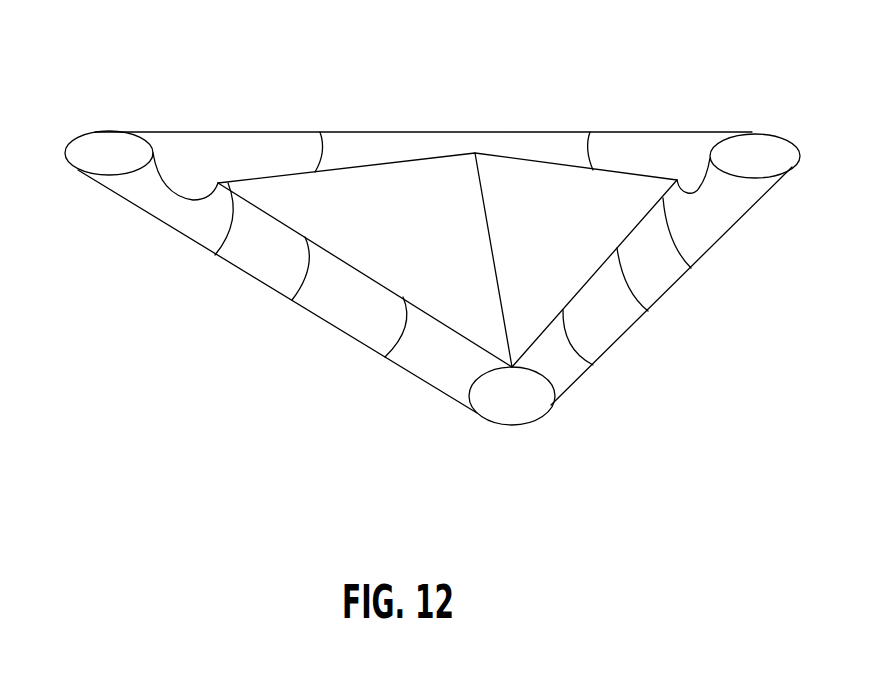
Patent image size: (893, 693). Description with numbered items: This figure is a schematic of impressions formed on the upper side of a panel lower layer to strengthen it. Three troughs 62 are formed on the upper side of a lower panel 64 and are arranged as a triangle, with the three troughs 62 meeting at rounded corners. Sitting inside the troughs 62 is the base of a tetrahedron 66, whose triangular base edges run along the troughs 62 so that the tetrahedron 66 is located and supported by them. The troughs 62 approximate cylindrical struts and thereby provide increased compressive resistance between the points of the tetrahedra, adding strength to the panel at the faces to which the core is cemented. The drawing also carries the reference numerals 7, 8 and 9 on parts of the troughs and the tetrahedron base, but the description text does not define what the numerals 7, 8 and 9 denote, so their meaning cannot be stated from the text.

The tubular leg member 7 is at (768, 163).
The tubular leg member 8 is at (658, 273).
The triangular panel 9 is at (548, 183).
The troughs 62 is at (242, 145).
The lower panel 64 is at (523, 410).
The tetrahedron 66 is at (400, 198).